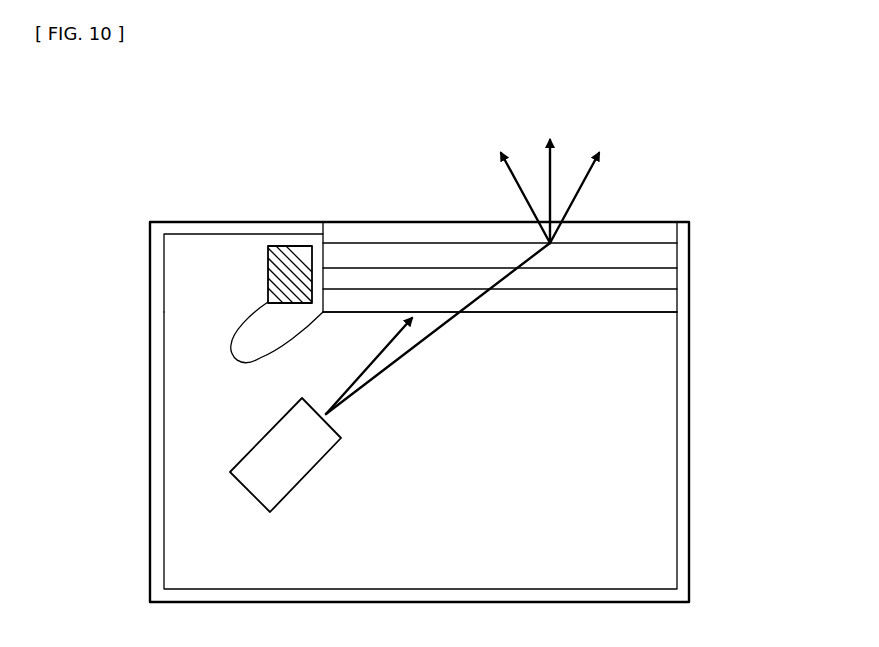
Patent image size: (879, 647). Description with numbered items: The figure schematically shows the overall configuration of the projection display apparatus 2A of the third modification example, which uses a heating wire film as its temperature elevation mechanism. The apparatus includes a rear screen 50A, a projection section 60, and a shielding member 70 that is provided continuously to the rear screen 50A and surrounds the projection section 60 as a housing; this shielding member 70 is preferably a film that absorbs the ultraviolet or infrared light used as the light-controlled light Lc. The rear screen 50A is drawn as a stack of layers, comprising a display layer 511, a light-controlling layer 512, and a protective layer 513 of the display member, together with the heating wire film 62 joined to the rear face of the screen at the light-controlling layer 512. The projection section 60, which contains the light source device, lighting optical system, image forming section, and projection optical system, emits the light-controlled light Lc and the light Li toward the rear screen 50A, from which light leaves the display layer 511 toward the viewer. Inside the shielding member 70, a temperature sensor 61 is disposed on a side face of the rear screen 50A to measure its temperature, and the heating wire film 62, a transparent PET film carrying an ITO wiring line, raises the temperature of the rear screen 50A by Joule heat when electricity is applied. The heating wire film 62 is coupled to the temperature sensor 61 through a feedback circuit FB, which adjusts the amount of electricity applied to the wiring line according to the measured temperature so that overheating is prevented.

The projection display apparatus 2A is at (641, 129).
The rear screen 50A is at (723, 187).
The display layer 511 is at (665, 232).
The light-controlling layer 512 is at (665, 256).
The protective layer 513 is at (665, 283).
The heating wire film 62 is at (665, 302).
The temperature sensor 61 is at (266, 285).
The feedback circuit FB is at (233, 357).
The projection section 60 is at (308, 478).
The light-controlled light Lc is at (378, 358).
The image light Li is at (445, 328).
The shielding member 70 is at (690, 410).